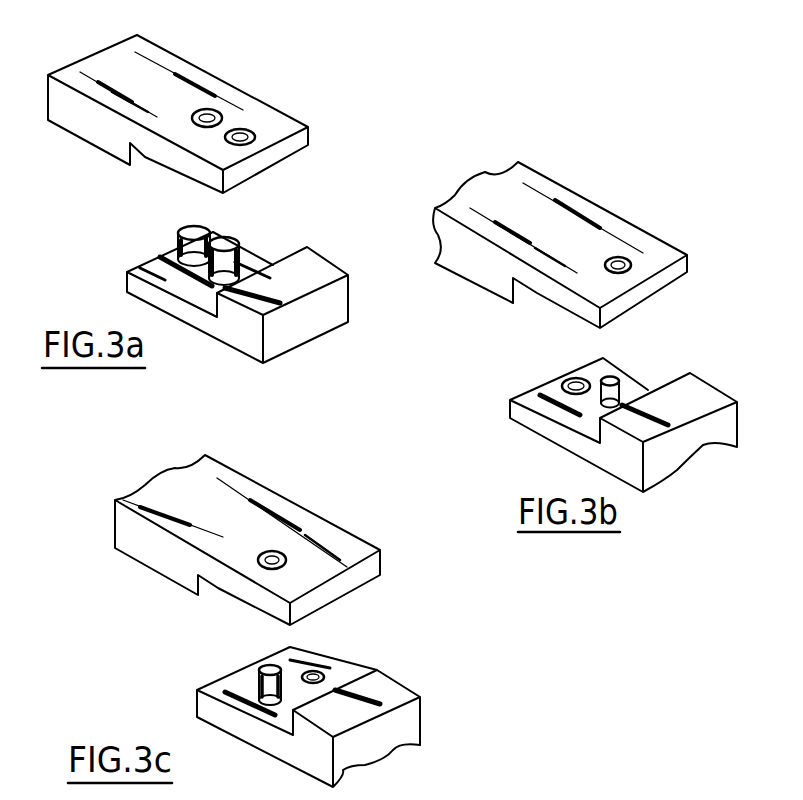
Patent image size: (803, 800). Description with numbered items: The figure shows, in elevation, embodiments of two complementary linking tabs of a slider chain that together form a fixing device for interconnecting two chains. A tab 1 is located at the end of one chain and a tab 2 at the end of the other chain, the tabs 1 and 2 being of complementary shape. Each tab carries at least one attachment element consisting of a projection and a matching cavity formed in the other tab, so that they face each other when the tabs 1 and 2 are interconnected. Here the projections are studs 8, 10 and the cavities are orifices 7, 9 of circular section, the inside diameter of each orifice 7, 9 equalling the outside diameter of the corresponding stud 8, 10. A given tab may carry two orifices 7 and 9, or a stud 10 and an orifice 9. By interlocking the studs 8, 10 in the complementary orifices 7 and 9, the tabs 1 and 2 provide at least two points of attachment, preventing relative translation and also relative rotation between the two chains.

In FIG. 3A, the tab 1 is at (86, 53).
In FIG. 3B, the tab 1 is at (490, 170).
In FIG. 3C, the tab 1 is at (141, 480).
In FIG. 3A, the tab 2 is at (366, 272).
In FIG. 3B, the tab 2 is at (717, 448).
In FIG. 3C, the tab 2 is at (430, 719).
In FIG. 3A, the orifice 7 is at (210, 110).
In FIG. 3B, the orifice 7 is at (623, 257).
In FIG. 3C, the orifice 7 is at (277, 553).
In FIG. 3A, the stud 8 is at (190, 227).
In FIG. 3A, the orifice 9 is at (247, 130).
In FIG. 3B, the orifice 9 is at (565, 378).
In FIG. 3C, the orifice 9 is at (320, 671).
In FIG. 3A, the stud 10 is at (237, 243).
In FIG. 3B, the stud 10 is at (617, 382).
In FIG. 3C, the stud 10 is at (259, 667).